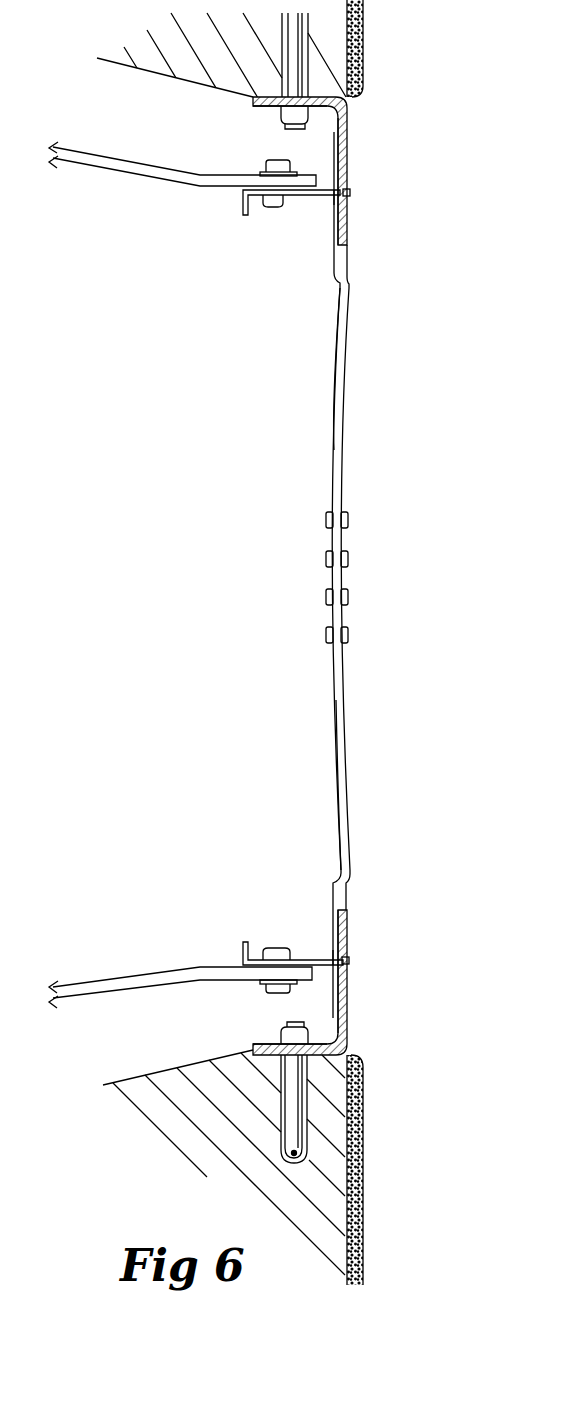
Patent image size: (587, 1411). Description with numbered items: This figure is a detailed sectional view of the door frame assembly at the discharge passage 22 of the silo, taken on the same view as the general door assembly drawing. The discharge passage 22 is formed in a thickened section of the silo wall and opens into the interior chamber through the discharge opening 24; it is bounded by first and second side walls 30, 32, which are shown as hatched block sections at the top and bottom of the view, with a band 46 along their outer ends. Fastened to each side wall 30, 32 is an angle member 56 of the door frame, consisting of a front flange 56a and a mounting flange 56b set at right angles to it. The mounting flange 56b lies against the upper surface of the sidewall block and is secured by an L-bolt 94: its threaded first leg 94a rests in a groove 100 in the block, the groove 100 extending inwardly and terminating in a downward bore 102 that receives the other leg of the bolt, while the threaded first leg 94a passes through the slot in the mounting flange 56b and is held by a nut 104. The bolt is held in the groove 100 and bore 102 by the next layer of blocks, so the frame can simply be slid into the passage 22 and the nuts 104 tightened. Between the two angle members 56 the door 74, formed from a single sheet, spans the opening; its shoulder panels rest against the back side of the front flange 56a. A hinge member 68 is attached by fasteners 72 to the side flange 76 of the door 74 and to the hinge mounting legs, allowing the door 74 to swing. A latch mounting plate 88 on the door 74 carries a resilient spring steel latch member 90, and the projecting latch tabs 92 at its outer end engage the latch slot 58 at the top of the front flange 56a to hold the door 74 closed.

The discharge passage 22 is at (247, 604).
The discharge opening 24 is at (378, 776).
The first side wall 30 is at (148, 1073).
The second side wall 32 is at (122, 65).
The wall band 46 is at (363, 1190).
The angle member 56 is at (365, 225).
The front flange 56a is at (349, 142).
The mounting flange 56b is at (253, 102).
The latch slot 58 is at (349, 198).
The hinge member 68 is at (110, 180).
The fastener 72 is at (272, 203).
The door 74 is at (396, 398).
The side flange 76 is at (316, 196).
The latch mounting plate 88 is at (342, 546).
The latch member 90 is at (362, 720).
The latch tab 92 is at (352, 193).
The L-bolt 94 is at (326, 31).
The threaded first leg 94a is at (308, 126).
The groove 100 is at (300, 69).
The downward bore 102 is at (303, 1152).
The nut 104 is at (283, 126).